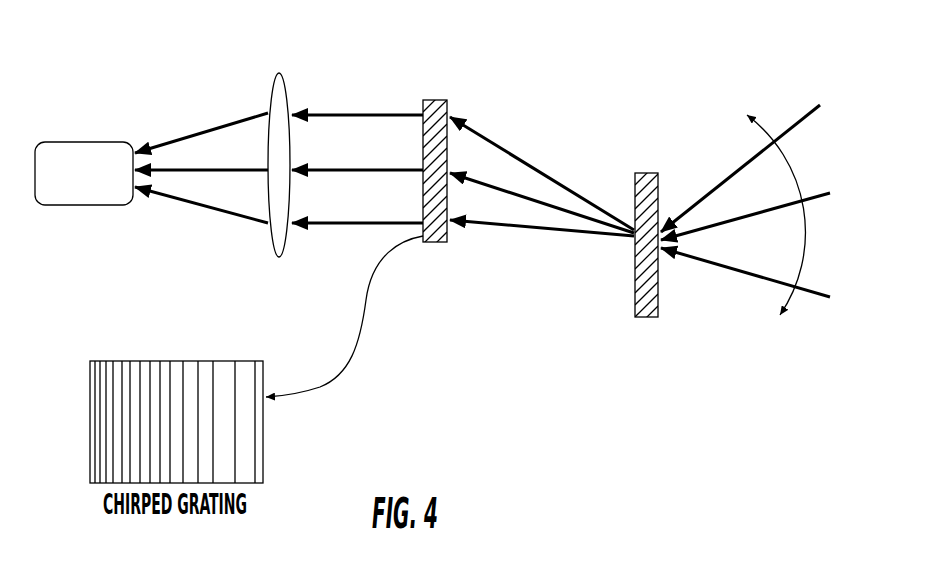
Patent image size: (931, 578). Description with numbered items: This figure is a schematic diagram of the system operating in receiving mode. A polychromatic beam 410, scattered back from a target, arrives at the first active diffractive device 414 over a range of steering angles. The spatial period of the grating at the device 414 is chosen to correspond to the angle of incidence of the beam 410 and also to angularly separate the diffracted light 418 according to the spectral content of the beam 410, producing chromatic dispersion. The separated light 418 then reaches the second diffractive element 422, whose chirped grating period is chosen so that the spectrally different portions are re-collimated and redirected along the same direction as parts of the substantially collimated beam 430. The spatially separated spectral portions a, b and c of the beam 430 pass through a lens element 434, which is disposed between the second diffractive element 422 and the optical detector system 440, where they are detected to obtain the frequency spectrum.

The polychromatic beam 410 is at (745, 189).
The first active diffractive device 414 is at (706, 288).
The diffracted light 418 is at (542, 159).
The second diffractive element 422 is at (435, 100).
The substantially-collimated beam 430 is at (377, 130).
The lens element 434 is at (272, 92).
The optical detector system 440 is at (84, 179).